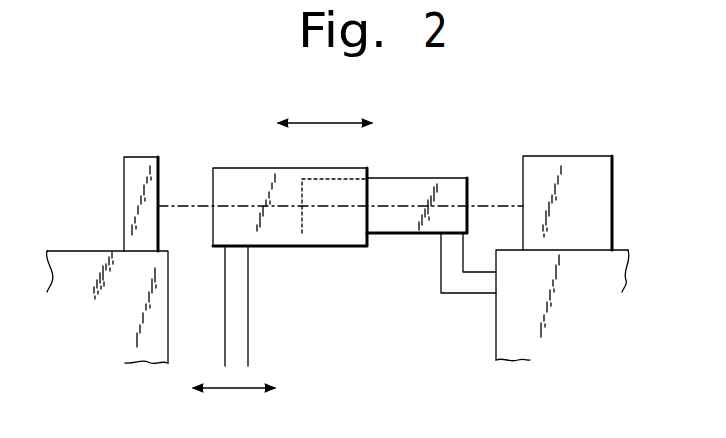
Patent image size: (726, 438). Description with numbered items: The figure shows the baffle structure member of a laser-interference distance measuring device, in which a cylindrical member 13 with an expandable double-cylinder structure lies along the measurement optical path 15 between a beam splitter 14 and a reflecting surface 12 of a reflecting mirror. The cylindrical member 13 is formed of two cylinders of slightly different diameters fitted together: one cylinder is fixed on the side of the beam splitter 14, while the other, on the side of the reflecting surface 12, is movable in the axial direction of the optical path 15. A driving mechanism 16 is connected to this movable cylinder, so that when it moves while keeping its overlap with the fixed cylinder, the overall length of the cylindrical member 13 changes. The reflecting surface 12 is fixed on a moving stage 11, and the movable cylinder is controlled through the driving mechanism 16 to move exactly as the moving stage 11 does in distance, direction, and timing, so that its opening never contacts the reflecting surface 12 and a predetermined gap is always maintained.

The moving stage 11 is at (107, 307).
The reflecting surface 12 is at (159, 182).
The cylindrical member 13 is at (268, 227).
The beam splitter 14 is at (560, 156).
The optical path 15 is at (493, 206).
The driving mechanism 16 is at (243, 317).